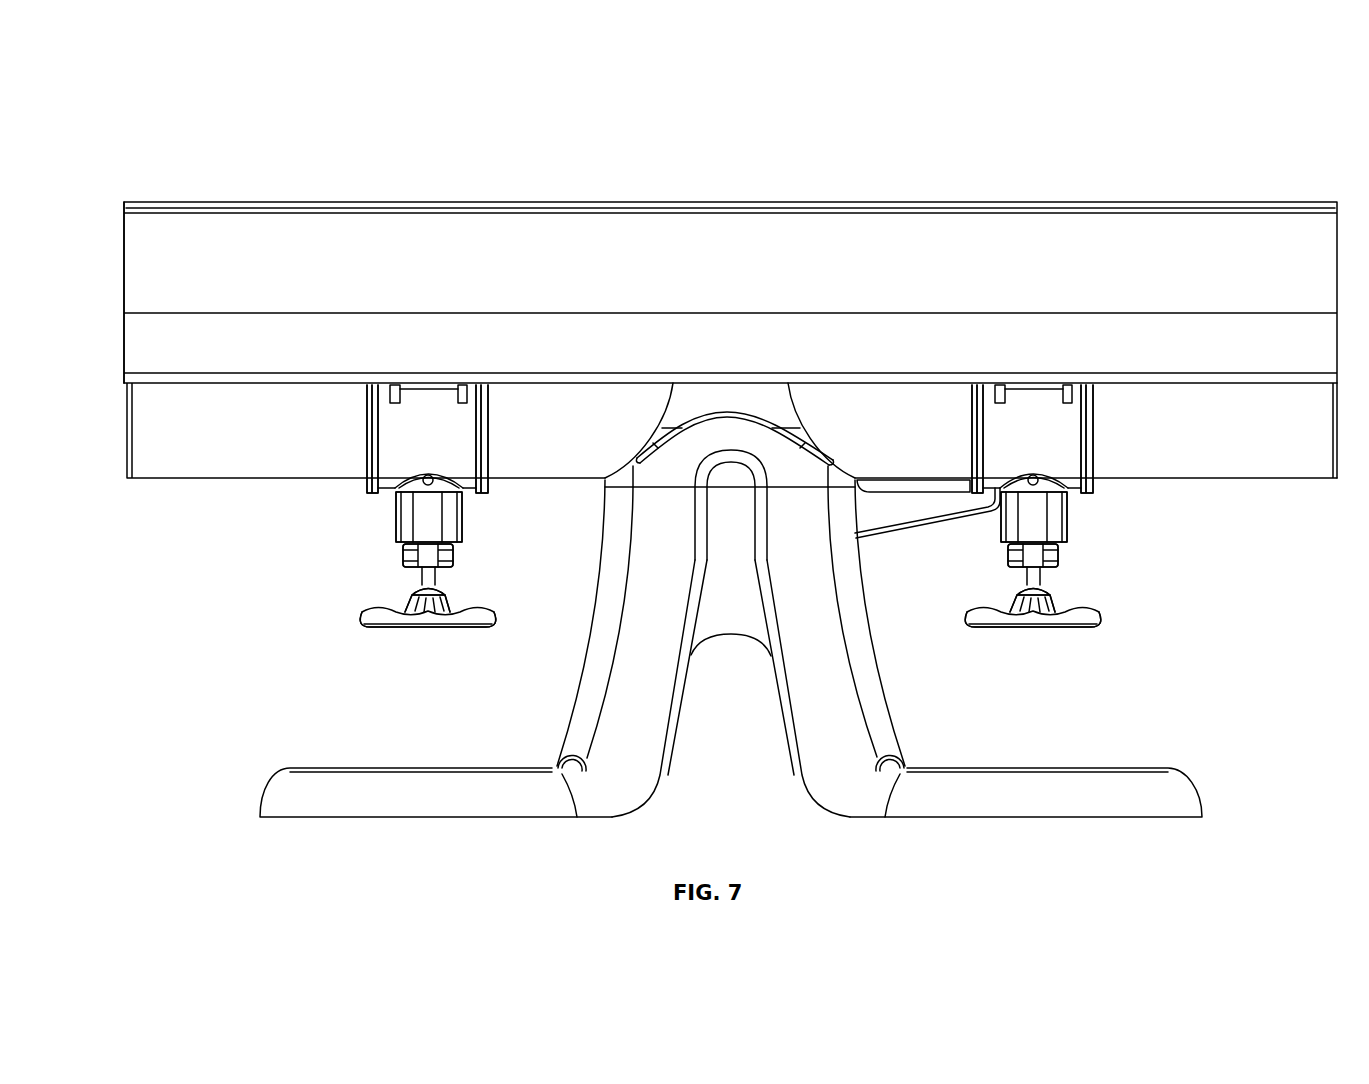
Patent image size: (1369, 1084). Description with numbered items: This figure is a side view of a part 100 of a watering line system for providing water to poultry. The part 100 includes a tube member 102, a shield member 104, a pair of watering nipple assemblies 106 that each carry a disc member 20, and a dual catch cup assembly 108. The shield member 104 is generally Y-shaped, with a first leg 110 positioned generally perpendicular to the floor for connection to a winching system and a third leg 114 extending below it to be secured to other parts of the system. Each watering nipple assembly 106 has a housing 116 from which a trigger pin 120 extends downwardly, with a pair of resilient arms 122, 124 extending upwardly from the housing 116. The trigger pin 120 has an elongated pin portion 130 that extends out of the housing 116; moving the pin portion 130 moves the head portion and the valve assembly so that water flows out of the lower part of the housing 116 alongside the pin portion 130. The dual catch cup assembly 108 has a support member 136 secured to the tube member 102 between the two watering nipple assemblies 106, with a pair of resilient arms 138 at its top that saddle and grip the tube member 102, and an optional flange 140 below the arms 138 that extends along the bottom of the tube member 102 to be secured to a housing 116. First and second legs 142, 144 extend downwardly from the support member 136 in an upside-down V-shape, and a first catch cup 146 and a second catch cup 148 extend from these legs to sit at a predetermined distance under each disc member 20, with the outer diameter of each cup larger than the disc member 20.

The part of watering line system 100 is at (160, 146).
The tube member 102 is at (1281, 481).
The shield member 104 is at (469, 199).
The watering nipple assembly 106 is at (392, 496).
The dual catch cup assembly 108 is at (667, 773).
The first leg 110 is at (626, 226).
The third leg 114 is at (140, 345).
The housing 116 is at (452, 518).
The trigger pin 120 is at (435, 576).
The resilient arm 122 is at (1070, 424).
The resilient arm 124 is at (390, 437).
The pin portion 130 is at (425, 580).
The support member 136 is at (808, 474).
The resilient arms 138 is at (683, 422).
The flange 140 is at (903, 512).
The first leg 142 is at (848, 710).
The second leg 144 is at (585, 707).
The first catch cup 146 is at (1178, 786).
The second catch cup 148 is at (288, 790).
The disc member 20 is at (400, 629).